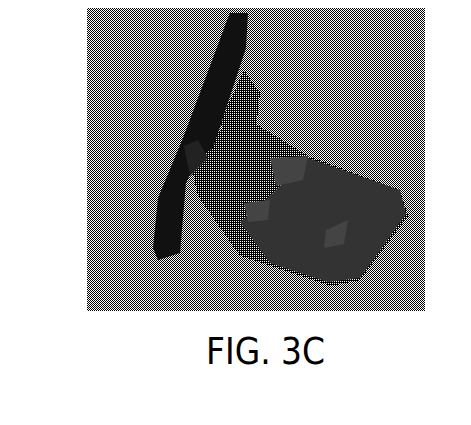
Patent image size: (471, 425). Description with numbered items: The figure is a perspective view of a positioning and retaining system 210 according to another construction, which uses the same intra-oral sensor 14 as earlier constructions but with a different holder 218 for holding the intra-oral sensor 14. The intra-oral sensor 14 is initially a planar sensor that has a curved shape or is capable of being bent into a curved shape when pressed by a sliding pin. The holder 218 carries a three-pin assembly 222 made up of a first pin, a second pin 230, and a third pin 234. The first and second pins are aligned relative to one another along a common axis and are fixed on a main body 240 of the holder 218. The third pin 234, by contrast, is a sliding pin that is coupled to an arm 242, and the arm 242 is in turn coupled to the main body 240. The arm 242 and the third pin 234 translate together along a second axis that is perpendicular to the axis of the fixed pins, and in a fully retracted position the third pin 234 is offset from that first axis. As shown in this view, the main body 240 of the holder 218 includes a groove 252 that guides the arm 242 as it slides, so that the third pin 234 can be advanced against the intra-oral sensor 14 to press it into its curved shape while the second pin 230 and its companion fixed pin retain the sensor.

The intra-oral sensor 14 is at (242, 32).
The positioning and retaining system 210 is at (115, 70).
The holder 218 is at (334, 156).
The three-pin assembly 222 is at (115, 174).
The second pin 230 is at (243, 72).
The third pin 234 is at (180, 150).
The main body 240 is at (286, 164).
The arm 242 is at (252, 200).
The groove 252 is at (325, 230).